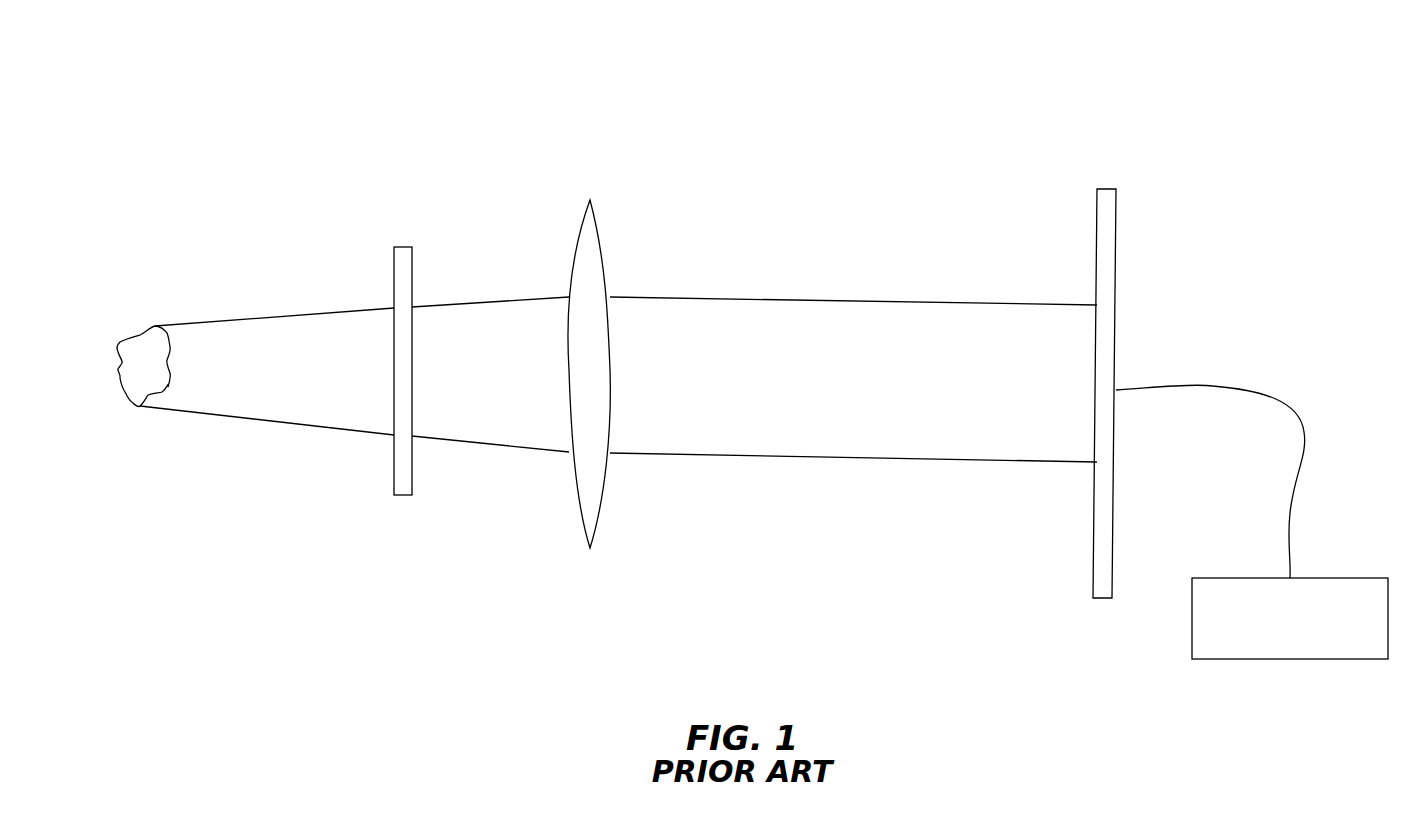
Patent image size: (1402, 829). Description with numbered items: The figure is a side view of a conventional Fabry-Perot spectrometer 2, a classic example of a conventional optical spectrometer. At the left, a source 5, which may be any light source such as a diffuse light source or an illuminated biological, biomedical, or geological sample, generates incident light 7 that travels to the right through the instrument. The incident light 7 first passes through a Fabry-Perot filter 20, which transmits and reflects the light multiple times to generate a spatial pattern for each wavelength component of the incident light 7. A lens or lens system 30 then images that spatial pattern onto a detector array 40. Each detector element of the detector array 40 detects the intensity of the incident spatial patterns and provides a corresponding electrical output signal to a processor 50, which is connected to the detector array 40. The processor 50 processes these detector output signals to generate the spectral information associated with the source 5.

The Fabry-Perot spectrometer 2 is at (1048, 88).
The source 5 is at (143, 367).
The incident light 7 is at (257, 353).
The Fabry-Perot filter 20 is at (408, 246).
The lens 30 is at (594, 212).
The detector array 40 is at (1101, 189).
The processor 50 is at (1330, 578).